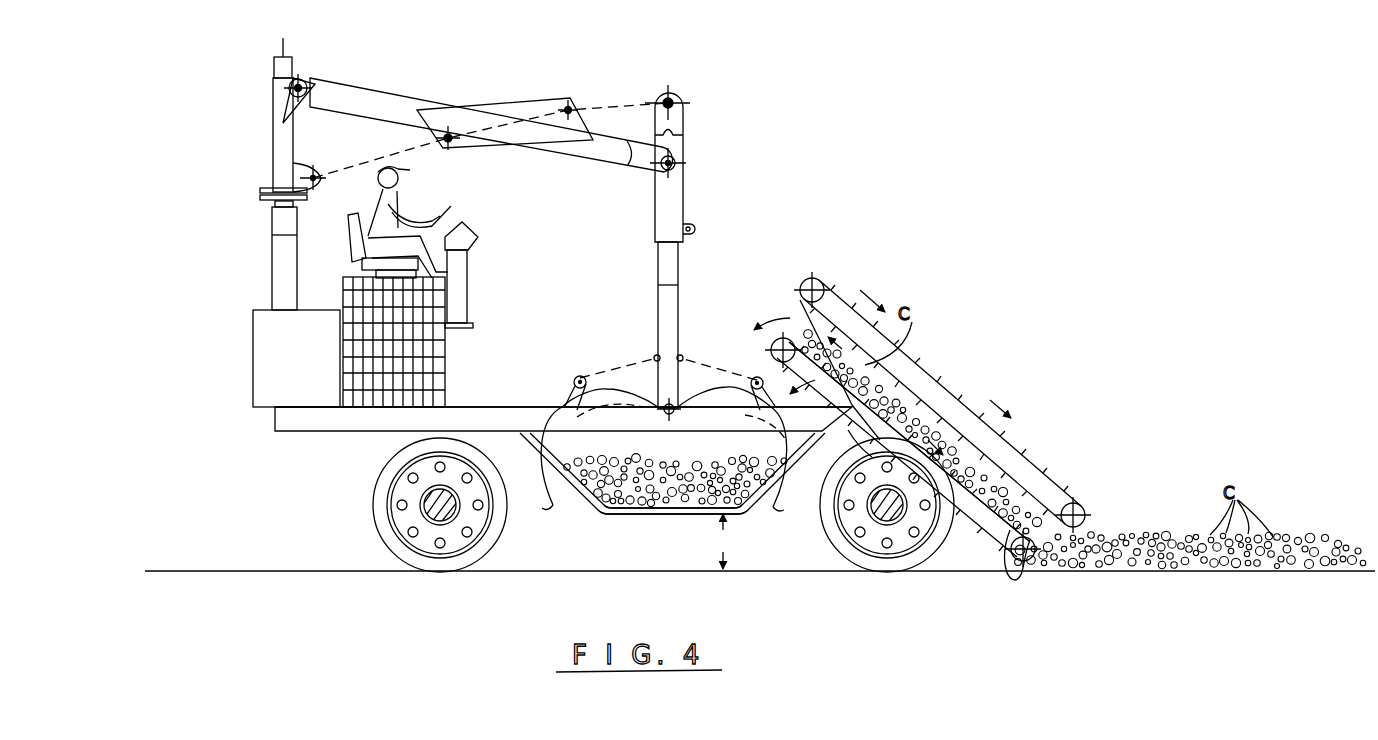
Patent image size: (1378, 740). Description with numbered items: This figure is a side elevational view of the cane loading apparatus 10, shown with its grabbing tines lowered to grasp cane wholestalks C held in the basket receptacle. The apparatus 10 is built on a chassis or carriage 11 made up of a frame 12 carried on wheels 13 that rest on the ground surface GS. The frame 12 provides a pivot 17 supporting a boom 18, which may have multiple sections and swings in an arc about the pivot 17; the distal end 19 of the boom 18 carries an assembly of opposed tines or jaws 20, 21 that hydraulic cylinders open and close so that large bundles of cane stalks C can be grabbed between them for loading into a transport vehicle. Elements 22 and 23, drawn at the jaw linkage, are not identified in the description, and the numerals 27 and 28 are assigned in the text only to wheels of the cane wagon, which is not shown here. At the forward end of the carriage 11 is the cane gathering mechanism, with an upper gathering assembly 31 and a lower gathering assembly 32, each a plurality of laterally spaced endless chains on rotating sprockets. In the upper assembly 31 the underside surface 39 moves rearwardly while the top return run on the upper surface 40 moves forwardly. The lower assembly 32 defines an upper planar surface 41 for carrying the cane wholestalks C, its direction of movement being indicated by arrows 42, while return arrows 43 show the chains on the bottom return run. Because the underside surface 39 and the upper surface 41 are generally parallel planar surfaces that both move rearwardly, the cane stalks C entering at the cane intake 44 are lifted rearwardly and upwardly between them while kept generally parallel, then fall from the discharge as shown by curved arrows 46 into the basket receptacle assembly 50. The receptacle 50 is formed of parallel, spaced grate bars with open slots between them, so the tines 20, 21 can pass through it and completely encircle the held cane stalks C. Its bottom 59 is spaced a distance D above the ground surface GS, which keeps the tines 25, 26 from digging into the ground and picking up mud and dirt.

The cane loading apparatus 10 is at (711, 92).
The chassis or carriage 11 is at (322, 427).
The frame 12 is at (490, 405).
The wheel 13 is at (375, 500).
The pivot 17 is at (275, 256).
The boom 18 is at (388, 95).
The boom distal end 19 is at (672, 463).
The tine or jaw 20 is at (548, 470).
The tine or jaw 21 is at (793, 458).
The link 22 is at (568, 392).
The link 23 is at (755, 376).
The tine 25 is at (552, 502).
The tine 26 is at (774, 508).
The wagon wheel 27 is at (617, 376).
The wagon wheel 28 is at (692, 358).
The upper gathering assembly 31 is at (1036, 460).
The lower gathering assembly 32 is at (1027, 568).
The underside surface 39 is at (800, 297).
The upper surface 40 is at (855, 310).
The upper planar surface 41 is at (1006, 569).
The arrows 42 is at (981, 556).
The return arrows 43 is at (870, 457).
The cane intake 44 is at (1082, 531).
The curved arrows 46 is at (765, 317).
The basket receptacle assembly 50 is at (606, 513).
The basket bottom 59 is at (691, 517).
The cane wholestalks C is at (654, 503).
The distance D is at (721, 541).
The ground surface GS is at (296, 568).